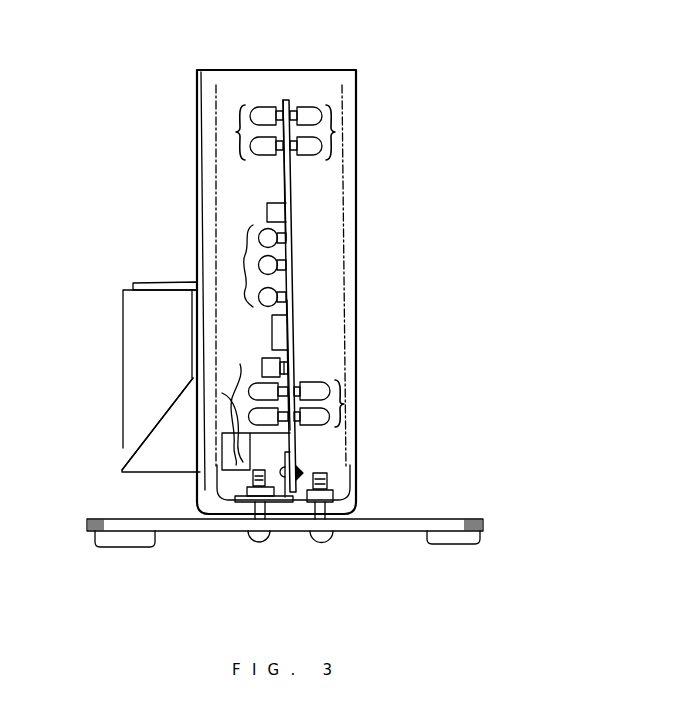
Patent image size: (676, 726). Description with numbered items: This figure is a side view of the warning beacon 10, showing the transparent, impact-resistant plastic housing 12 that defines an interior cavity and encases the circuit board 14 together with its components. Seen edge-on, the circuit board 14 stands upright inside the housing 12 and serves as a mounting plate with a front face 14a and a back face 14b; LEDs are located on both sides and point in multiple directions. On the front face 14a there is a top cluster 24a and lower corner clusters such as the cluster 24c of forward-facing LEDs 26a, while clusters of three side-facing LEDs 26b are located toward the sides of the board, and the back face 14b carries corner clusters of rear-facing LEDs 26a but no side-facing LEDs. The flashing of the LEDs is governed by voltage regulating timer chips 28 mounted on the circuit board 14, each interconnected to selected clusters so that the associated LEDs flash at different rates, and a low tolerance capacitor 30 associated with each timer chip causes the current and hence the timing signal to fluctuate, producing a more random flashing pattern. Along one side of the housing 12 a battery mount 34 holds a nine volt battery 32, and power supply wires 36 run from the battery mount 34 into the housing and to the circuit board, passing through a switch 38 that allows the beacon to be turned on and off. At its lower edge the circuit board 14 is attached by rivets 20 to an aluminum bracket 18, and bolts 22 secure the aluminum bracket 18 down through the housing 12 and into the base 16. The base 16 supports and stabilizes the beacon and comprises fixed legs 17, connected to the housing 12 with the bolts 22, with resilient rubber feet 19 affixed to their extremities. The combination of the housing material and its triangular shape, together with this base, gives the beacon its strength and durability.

The warning beacon 10 is at (474, 93).
The housing 12 is at (352, 320).
The circuit board 14 is at (306, 178).
The front face 14a is at (283, 168).
The back face 14b is at (293, 310).
The base 16 is at (393, 508).
The fixed legs 17 is at (98, 519).
The aluminum bracket 18 is at (296, 457).
The rubber feet 19 is at (127, 545).
The rivets 20 is at (301, 475).
The bolts 22 is at (318, 543).
The top cluster 24a is at (238, 125).
The lower corner cluster 24c is at (338, 410).
The forward-facing LEDs 26a is at (320, 397).
The side-facing LEDs 26b is at (262, 110).
The voltage regulating timer chips 28 is at (276, 335).
The low tolerance capacitor 30 is at (270, 362).
The 9 volt battery 32 is at (165, 367).
The battery mount 34 is at (162, 450).
The power supply wires 36 is at (232, 406).
The switch 38 is at (232, 462).